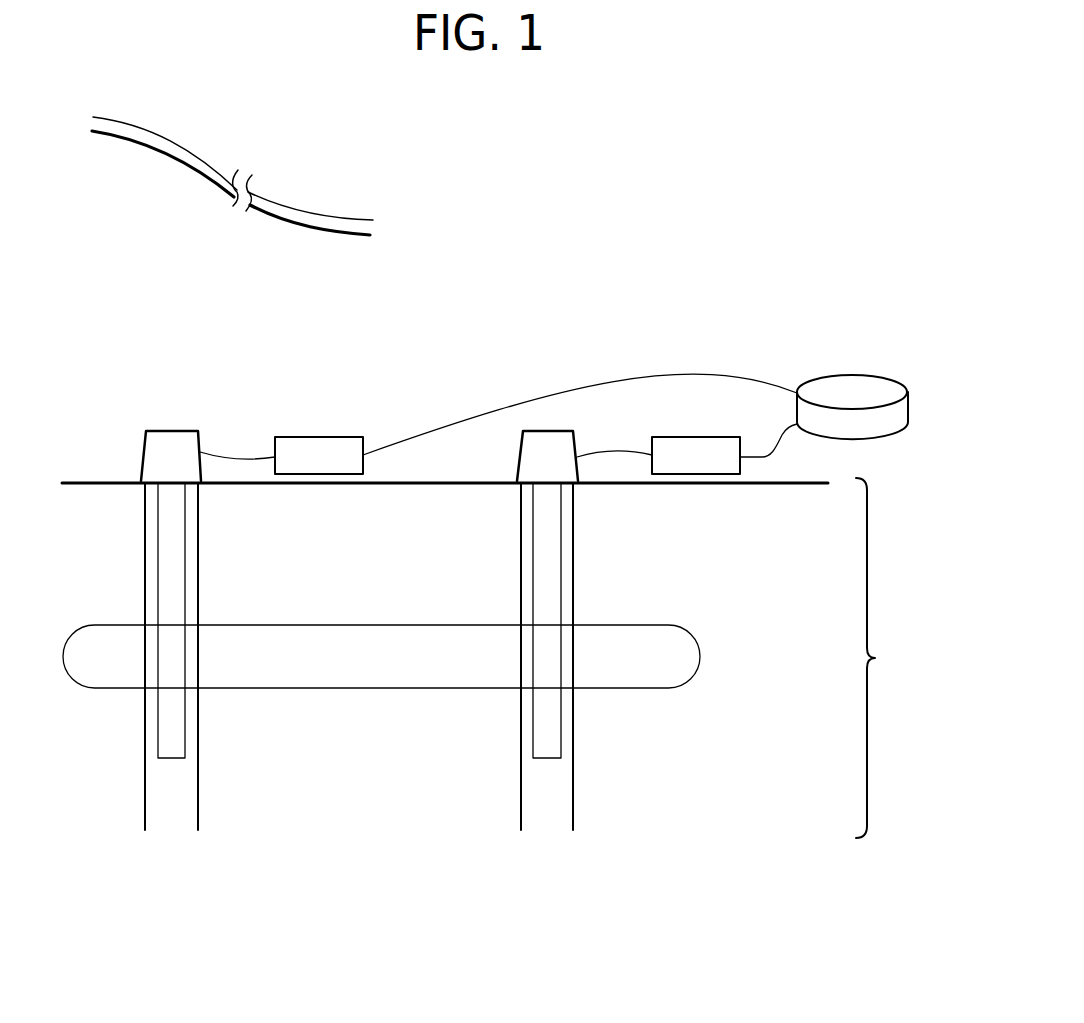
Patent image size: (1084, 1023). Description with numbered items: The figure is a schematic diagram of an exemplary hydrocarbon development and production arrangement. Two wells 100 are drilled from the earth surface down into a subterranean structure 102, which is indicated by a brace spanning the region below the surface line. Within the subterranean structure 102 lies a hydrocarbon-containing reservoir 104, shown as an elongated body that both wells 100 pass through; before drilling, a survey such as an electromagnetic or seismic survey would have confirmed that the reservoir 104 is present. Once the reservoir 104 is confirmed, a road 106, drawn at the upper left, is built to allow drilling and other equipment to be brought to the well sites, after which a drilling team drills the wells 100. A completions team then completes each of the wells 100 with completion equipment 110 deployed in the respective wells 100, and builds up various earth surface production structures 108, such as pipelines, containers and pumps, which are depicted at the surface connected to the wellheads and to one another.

The wells 100 is at (198, 581).
The subterranean structure 102 is at (890, 658).
The hydrocarbon-containing reservoir 104 is at (393, 688).
The road 106 is at (207, 153).
The earth surface production structures 108 is at (333, 437).
The completion equipment 110 is at (185, 533).